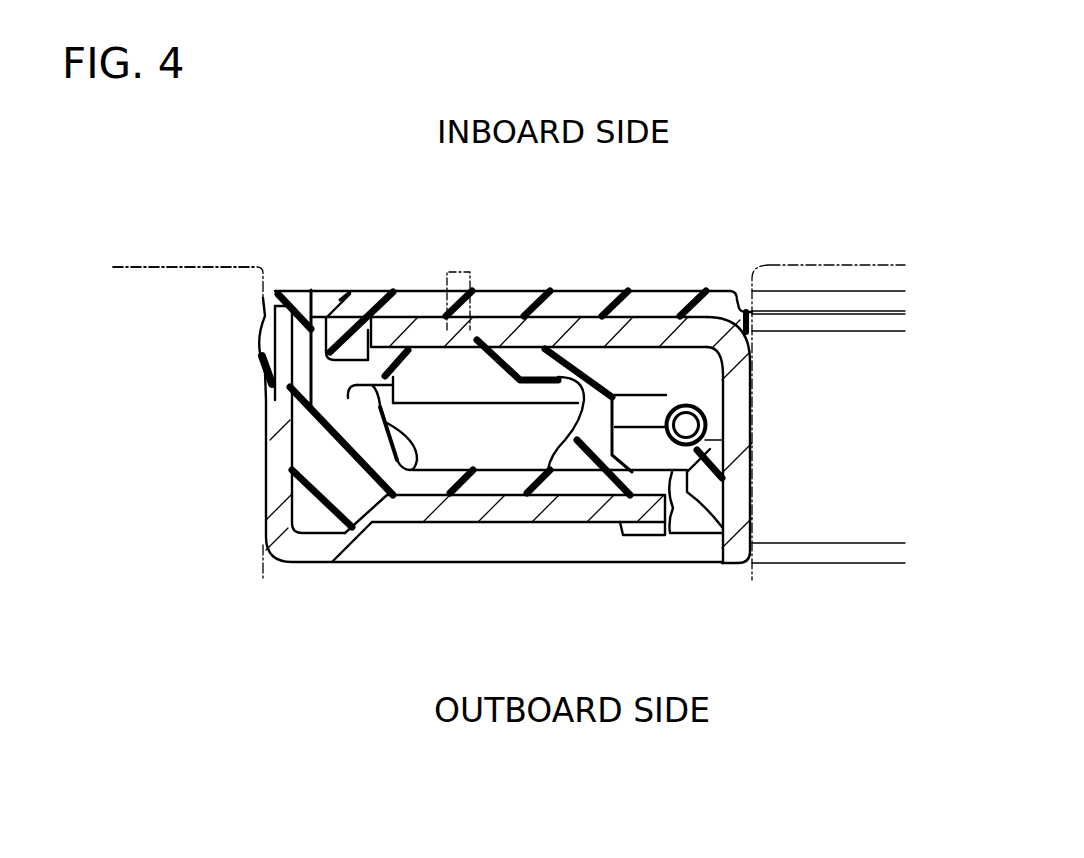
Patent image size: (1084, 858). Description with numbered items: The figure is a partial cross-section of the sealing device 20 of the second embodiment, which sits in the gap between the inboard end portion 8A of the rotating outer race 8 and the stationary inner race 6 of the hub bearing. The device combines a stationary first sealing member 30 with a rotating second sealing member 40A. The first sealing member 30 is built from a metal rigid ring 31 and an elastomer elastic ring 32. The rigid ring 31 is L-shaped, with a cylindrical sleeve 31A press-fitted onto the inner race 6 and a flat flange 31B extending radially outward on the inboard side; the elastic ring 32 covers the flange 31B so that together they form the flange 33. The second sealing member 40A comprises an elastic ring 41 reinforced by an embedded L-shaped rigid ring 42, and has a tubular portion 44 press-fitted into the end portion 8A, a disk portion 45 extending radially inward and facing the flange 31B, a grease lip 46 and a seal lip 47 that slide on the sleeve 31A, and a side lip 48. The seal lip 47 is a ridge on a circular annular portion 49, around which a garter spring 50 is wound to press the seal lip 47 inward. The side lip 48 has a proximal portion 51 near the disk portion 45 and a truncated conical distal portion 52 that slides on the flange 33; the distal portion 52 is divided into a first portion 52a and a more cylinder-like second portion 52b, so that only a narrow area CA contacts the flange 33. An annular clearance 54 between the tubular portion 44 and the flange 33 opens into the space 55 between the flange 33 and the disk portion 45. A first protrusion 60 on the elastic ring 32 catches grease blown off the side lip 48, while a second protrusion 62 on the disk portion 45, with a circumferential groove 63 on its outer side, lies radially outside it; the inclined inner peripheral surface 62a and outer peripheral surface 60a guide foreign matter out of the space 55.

The sealing device 20 is at (324, 213).
The end portion 8A is at (155, 264).
The outer race 8 is at (182, 264).
The inner race 6 is at (779, 262).
The first sealing member 30 is at (630, 222).
The elastic ring 32 is at (587, 297).
The rigid ring 31 is at (753, 373).
The sleeve 31A is at (733, 452).
The flange 31B is at (640, 330).
The flange 33 is at (363, 293).
The rigid ring 42 is at (298, 478).
The tubular portion 44 is at (303, 450).
The annular clearance 54 is at (245, 339).
The circumferential groove 63 is at (318, 383).
The first protrusion 60 is at (371, 303).
The outer peripheral surface 60a is at (353, 293).
The space 55 is at (432, 350).
The narrow area CA is at (465, 282).
The side lip 48 is at (512, 352).
The distal portion 52 is at (533, 340).
The first portion 52a is at (540, 400).
The second portion 52b is at (442, 347).
The garter spring 50 is at (665, 406).
The circular annular portion 49 is at (720, 463).
The seal lip 47 is at (740, 430).
The grease lip 46 is at (720, 517).
The second protrusion 62 is at (360, 410).
The inner peripheral surface 62a is at (405, 530).
The elastic ring 41 is at (512, 500).
The disk portion 45 is at (465, 515).
The proximal portion 51 is at (555, 500).
The second sealing member 40A is at (386, 622).